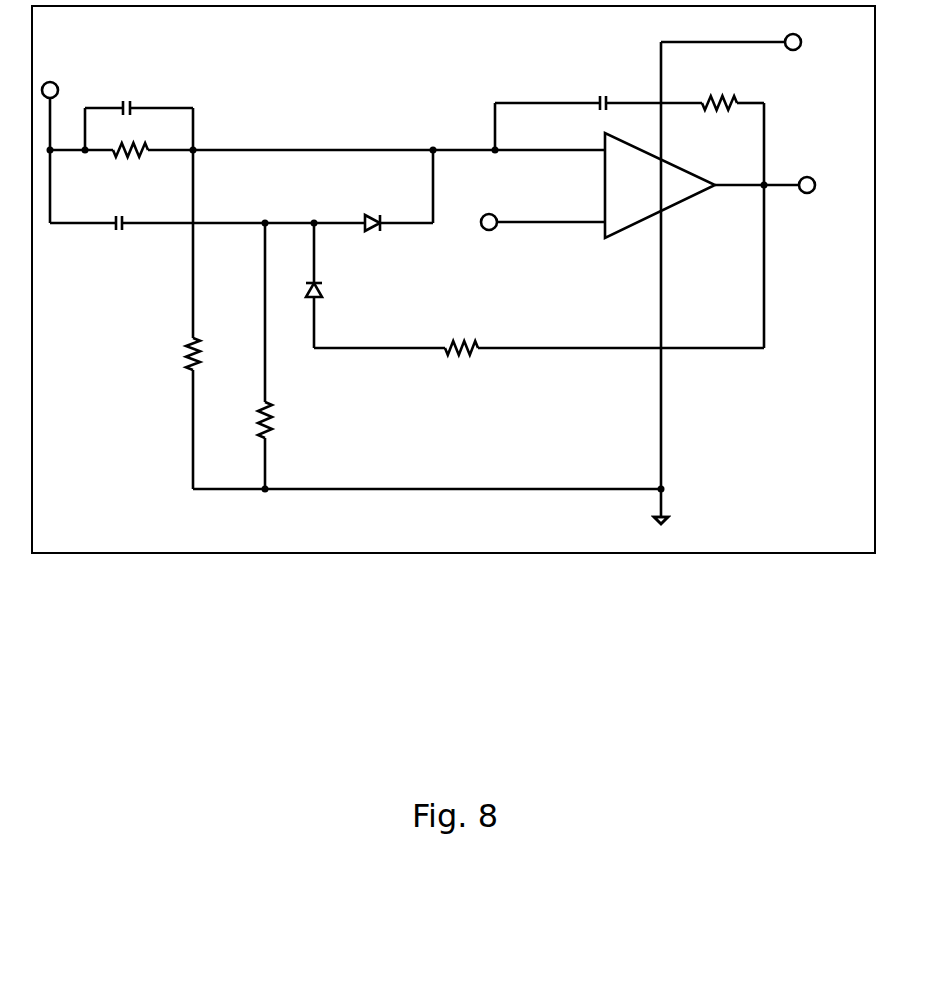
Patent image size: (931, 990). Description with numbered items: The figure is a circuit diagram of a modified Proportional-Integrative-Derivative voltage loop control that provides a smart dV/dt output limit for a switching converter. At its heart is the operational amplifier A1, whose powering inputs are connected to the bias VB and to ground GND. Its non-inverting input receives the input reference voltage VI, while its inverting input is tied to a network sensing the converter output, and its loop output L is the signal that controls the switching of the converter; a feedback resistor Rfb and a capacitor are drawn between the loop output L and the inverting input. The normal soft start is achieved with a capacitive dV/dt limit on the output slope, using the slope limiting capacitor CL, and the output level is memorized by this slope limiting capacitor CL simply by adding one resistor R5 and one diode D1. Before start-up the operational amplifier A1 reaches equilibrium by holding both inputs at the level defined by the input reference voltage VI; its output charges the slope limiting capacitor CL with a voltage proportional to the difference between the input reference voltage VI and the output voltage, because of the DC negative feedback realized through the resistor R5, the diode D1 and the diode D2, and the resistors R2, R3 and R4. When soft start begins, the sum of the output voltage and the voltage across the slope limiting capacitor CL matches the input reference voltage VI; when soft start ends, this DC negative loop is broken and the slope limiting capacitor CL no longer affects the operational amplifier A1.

The resistor R3 is at (130, 168).
The slope limiting capacitor CL is at (121, 241).
The diode D2 is at (377, 244).
The diode D1 is at (332, 302).
The resistor R4 is at (208, 357).
The resistor R2 is at (280, 431).
The resistor R5 is at (461, 333).
The feedback resistor Rfb is at (719, 103).
The operational amplifier A1 is at (660, 202).
The input reference voltage VI is at (496, 242).
The bias VB is at (812, 40).
The loop output L is at (807, 202).
The ground GND is at (691, 520).